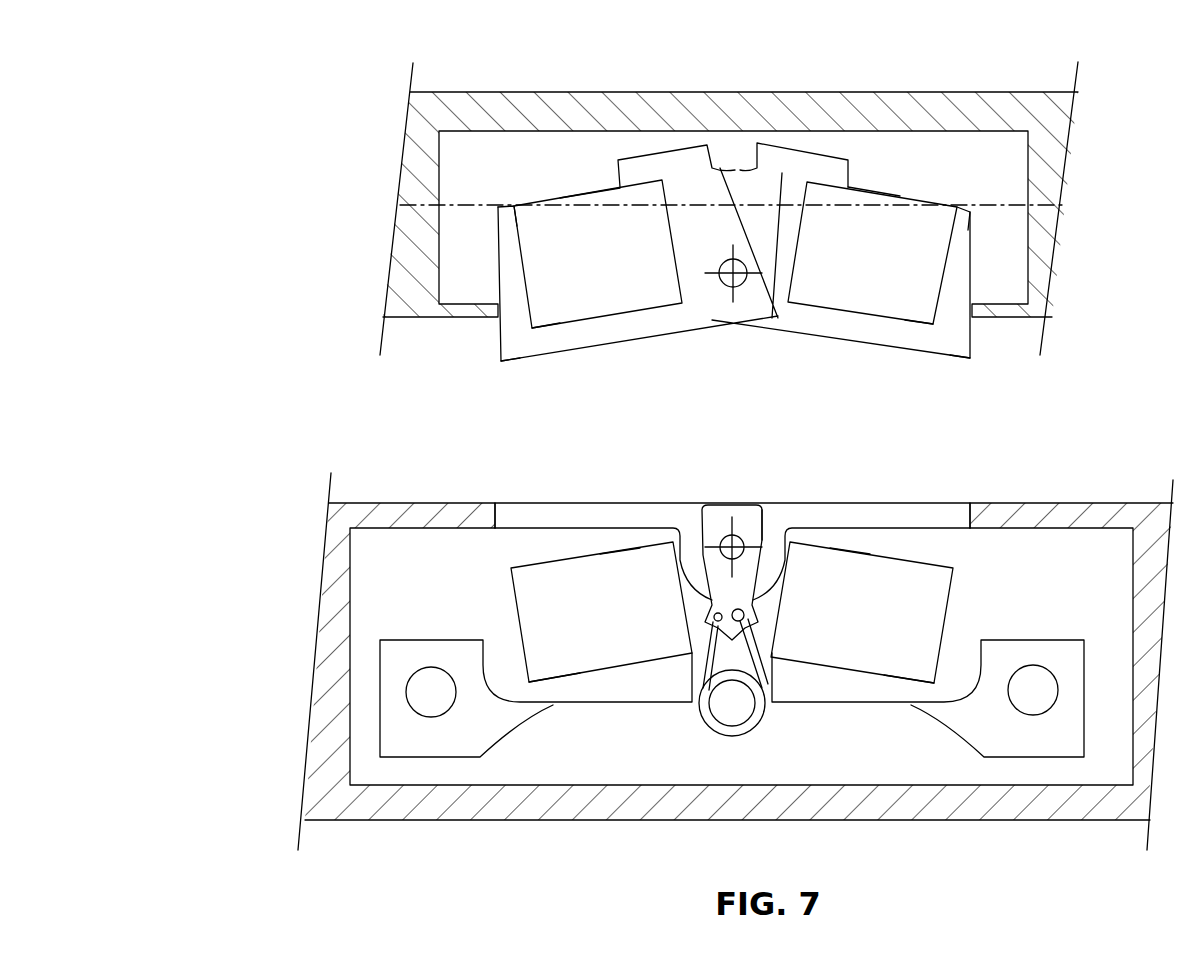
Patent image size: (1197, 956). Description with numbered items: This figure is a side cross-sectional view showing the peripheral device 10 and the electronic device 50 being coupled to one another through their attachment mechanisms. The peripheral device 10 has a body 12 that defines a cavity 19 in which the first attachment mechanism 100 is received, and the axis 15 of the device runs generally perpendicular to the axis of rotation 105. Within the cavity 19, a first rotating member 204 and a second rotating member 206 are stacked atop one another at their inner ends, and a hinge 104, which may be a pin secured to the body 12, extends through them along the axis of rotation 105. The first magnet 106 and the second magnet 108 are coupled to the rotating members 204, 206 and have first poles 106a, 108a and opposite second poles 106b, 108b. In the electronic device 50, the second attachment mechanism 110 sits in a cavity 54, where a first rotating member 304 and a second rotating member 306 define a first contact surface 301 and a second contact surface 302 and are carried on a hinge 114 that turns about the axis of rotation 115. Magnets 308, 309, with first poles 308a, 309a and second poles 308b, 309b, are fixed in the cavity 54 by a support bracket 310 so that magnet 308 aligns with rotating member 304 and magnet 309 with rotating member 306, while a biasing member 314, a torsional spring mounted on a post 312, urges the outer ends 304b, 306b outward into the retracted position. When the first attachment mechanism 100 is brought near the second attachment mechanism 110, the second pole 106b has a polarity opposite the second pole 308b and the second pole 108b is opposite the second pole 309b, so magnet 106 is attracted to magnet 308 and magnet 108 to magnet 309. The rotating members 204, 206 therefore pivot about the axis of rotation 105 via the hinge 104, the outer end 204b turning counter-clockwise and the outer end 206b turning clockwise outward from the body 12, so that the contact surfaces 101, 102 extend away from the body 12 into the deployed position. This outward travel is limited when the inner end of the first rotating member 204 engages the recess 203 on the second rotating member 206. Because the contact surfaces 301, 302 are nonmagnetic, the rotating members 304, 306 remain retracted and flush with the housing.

The peripheral device 10 is at (358, 101).
The body 12 is at (1022, 92).
The axis 15 is at (1050, 200).
The cavity 19 is at (593, 147).
The first attachment mechanism 100 is at (470, 283).
The contact surface 101 is at (638, 336).
The first contact surface 102 is at (836, 340).
The hinge 104 is at (740, 290).
The axis of rotation 105 is at (717, 284).
The first magnet 106 is at (517, 222).
The first pole 106a is at (594, 187).
The second pole 106b is at (549, 333).
The second magnet 108 is at (947, 243).
The first pole 108a is at (863, 188).
The second pole 108b is at (913, 328).
The recess 203 is at (763, 300).
The first rotating member 204 is at (499, 208).
The outer end 204b is at (497, 362).
The second rotating member 206 is at (959, 208).
The outer end 206b is at (973, 361).
The electronic device 50 is at (258, 549).
The cavity 54 is at (947, 770).
The second attachment mechanism 110 is at (383, 605).
The first contact surface 301 is at (529, 503).
The second contact surface 302 is at (931, 503).
The first rotating member 304 is at (675, 502).
The outer end 304b is at (492, 502).
The second rotating member 306 is at (804, 501).
The outer end 306b is at (973, 502).
The hinge 114 is at (735, 535).
The axis of rotation 115 is at (748, 528).
The magnet 308 is at (518, 612).
The first pole 308a is at (608, 674).
The second pole 308b is at (600, 546).
The magnet 309 is at (949, 602).
The first pole 309a is at (866, 680).
The second pole 309b is at (878, 552).
The support bracket 310 is at (505, 735).
The post 312 is at (760, 705).
The biasing member 314 is at (703, 706).